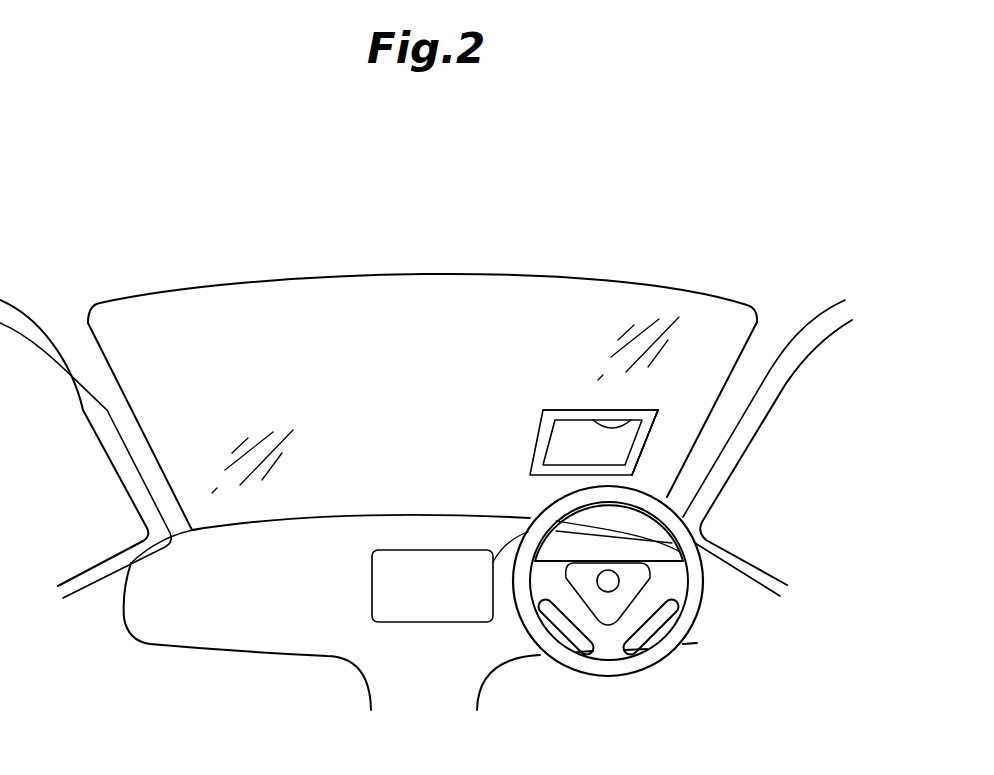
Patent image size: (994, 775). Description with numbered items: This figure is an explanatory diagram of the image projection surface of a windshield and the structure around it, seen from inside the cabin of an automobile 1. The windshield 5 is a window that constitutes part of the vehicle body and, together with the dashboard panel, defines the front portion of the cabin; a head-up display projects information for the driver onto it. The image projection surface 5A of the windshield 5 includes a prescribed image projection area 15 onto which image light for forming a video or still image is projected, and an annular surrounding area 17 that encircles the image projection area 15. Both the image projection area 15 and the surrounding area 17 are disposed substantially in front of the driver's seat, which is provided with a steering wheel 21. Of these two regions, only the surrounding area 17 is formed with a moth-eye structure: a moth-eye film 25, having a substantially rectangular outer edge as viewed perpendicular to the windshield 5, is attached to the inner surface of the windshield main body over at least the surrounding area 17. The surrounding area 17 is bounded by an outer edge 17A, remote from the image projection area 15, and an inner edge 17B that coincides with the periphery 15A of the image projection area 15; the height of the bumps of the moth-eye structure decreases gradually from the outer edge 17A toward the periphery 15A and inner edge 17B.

The automobile 1 is at (414, 227).
The windshield 5 is at (595, 293).
The image projection surface 5A is at (394, 374).
The image projection area 15 is at (589, 444).
The periphery of the image projection area 15A is at (556, 411).
The surrounding area 17 is at (535, 453).
The outer edge of the surrounding area 17A is at (658, 409).
The inner edge of the surrounding area 17B is at (593, 420).
The steering wheel 21 is at (693, 590).
The moth-eye film 25 is at (642, 452).